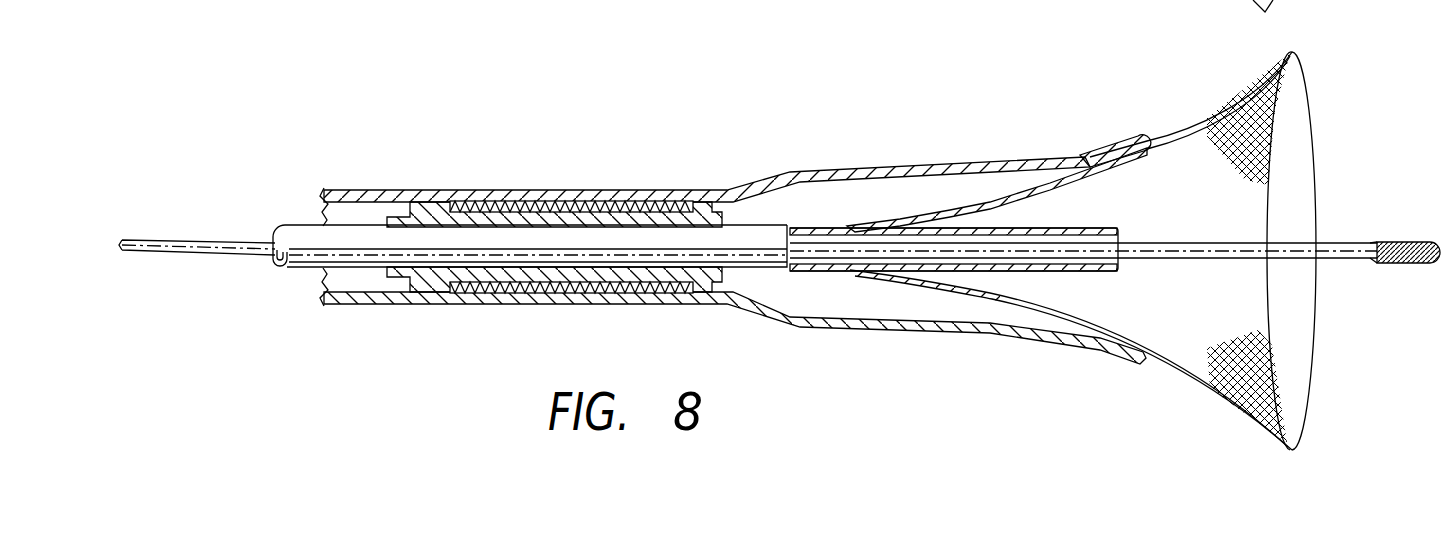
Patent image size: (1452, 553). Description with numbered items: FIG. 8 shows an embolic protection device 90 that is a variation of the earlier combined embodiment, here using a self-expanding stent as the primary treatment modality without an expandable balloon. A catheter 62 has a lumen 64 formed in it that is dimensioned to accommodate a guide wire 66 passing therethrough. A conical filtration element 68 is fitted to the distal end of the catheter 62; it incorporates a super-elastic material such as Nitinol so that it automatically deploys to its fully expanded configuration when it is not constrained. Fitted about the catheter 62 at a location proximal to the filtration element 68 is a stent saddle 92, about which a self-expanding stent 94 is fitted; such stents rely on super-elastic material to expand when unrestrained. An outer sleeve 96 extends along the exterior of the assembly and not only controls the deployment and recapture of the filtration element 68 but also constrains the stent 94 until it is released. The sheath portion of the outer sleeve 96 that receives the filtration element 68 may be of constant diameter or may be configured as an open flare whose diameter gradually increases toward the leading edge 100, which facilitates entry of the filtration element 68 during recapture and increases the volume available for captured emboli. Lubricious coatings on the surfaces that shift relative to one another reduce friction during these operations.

The embolic protection device assembly 90 is at (715, 63).
The outer sleeve 96 is at (412, 190).
The self-expanding stent 94 is at (577, 205).
The stent saddle 92 is at (707, 223).
The catheter 62 is at (493, 252).
The lumen 64 is at (270, 256).
The guide wire 66 is at (1357, 246).
The leading edge 100 is at (1117, 150).
The conical filtration element 68 is at (1248, 397).